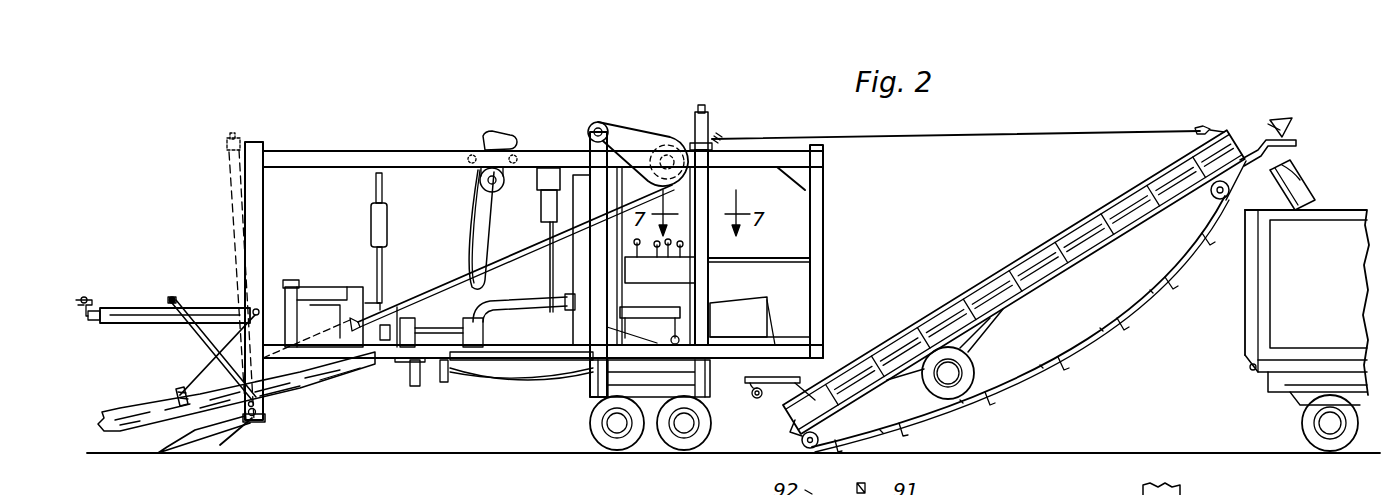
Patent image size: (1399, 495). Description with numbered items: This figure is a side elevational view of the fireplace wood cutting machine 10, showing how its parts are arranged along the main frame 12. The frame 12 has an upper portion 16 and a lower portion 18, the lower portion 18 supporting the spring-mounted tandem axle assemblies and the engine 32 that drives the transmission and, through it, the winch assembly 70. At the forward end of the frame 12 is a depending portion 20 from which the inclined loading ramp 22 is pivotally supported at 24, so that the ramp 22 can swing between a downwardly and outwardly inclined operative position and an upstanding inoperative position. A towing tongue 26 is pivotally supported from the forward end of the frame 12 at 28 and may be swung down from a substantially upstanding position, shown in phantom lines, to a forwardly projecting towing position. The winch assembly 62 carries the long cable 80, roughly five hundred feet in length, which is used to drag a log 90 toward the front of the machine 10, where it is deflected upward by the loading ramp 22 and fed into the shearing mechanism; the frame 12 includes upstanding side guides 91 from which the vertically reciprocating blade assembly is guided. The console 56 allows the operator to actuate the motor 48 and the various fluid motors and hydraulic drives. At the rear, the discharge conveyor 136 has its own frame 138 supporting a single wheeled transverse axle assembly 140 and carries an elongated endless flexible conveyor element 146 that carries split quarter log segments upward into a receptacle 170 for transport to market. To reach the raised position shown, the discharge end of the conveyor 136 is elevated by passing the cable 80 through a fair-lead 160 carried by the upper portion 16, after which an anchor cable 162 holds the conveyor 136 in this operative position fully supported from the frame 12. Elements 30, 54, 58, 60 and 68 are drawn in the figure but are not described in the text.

The fireplace wood cutting machine 10 is at (370, 146).
The main frame 12 is at (363, 373).
The upper portion of frame 16 is at (427, 148).
The lower portion of frame 18 is at (515, 368).
The depending portion 20 is at (255, 424).
The inclined loading ramp 22 is at (197, 437).
The pivot of loading ramp 24 is at (227, 451).
The towing tongue 26 is at (240, 203).
The pivot of towing tongue 28 is at (212, 353).
The strut 30 is at (203, 326).
The engine 32 is at (325, 300).
The motor 48 is at (520, 304).
The upright post 54 is at (580, 186).
The console 56 is at (677, 297).
The piston rod 58 is at (545, 232).
The hydraulic cylinder 60 is at (547, 208).
The winch assembly 62 is at (649, 121).
The top beam 68 is at (315, 160).
The winch assembly 70 is at (492, 122).
The cable 80 is at (431, 291).
The log 90 is at (140, 412).
The side guides 91 is at (716, 190).
The discharge conveyor 136 is at (1004, 257).
The frame of discharge conveyor 138 is at (1033, 291).
The single wheeled transverse axle assembly 140 is at (978, 390).
The endless flexible conveyor element 146 is at (1084, 331).
The fair-lead 160 is at (709, 128).
The anchor cable 162 is at (1038, 135).
The receptacle 170 is at (1245, 281).